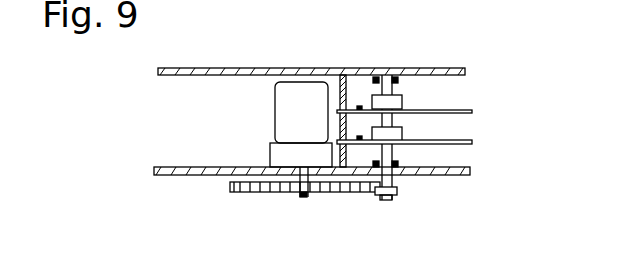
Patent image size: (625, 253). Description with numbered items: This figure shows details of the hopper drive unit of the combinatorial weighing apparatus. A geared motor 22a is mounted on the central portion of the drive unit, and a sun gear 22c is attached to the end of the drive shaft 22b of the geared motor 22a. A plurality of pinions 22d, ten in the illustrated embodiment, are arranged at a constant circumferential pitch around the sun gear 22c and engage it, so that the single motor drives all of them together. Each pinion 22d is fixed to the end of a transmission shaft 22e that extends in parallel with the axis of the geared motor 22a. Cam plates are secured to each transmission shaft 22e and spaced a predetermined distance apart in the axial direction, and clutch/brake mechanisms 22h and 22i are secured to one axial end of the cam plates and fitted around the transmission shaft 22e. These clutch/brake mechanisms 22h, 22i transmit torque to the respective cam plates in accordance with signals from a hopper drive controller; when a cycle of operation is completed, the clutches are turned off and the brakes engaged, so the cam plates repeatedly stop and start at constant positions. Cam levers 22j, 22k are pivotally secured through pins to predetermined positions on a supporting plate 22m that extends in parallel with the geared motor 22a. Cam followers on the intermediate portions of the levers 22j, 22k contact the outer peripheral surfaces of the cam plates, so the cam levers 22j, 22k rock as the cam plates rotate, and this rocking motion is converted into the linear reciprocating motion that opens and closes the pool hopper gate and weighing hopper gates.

The geared motor 22a is at (282, 113).
The drive shaft 22b is at (297, 195).
The sun gear 22c is at (243, 193).
The pinion 22d is at (397, 190).
The transmission shaft 22e is at (385, 200).
The clutch/brake mechanism 22h is at (402, 94).
The clutch/brake mechanism 22i is at (402, 128).
The cam lever 22j is at (471, 111).
The cam lever 22k is at (472, 141).
The supporting plate 22m is at (347, 82).